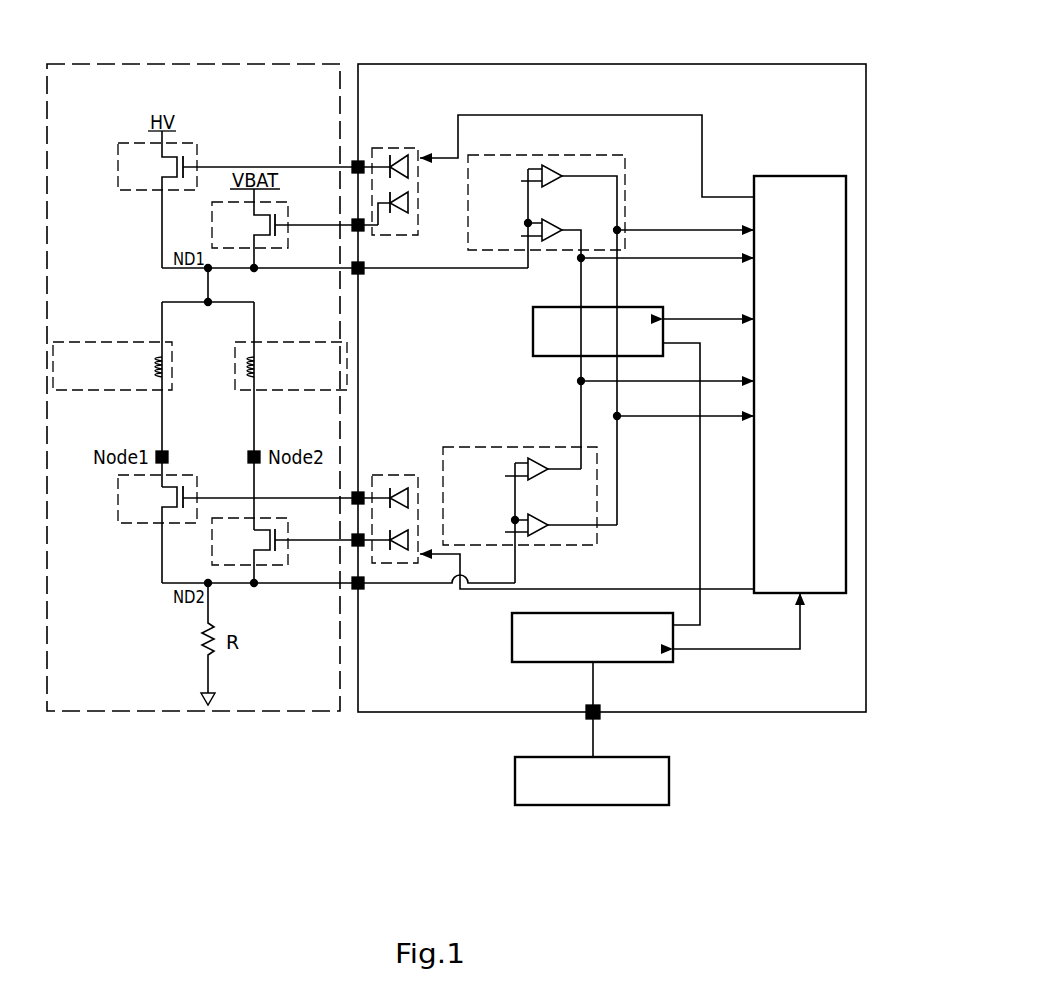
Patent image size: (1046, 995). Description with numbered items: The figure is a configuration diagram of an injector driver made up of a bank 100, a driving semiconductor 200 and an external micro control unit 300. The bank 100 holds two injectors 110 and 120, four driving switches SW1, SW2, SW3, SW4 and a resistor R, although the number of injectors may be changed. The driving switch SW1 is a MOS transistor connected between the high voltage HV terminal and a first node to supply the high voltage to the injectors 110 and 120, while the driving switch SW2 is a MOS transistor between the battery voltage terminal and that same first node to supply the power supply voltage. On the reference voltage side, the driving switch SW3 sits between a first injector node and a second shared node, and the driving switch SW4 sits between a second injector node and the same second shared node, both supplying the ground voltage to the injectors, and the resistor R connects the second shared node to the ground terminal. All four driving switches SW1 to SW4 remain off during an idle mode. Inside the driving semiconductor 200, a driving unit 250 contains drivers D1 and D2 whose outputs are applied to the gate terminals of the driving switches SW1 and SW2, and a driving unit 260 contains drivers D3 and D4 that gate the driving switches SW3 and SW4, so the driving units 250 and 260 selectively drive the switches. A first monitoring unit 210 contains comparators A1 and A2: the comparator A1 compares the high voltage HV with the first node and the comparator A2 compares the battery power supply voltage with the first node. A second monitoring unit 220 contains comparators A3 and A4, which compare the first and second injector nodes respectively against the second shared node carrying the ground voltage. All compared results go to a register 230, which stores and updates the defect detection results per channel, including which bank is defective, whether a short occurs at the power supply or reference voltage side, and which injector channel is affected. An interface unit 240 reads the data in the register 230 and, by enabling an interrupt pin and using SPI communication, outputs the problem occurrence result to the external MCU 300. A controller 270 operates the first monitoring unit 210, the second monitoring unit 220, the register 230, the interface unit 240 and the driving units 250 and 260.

The bank 100 is at (321, 62).
The driving semiconductor 200 is at (845, 62).
The injector 110 is at (97, 341).
The injector 120 is at (305, 341).
The first monitoring unit 210 is at (575, 325).
The second monitoring unit 220 is at (548, 501).
The register 230 is at (533, 331).
The interface unit 240 is at (512, 635).
The driving unit 250 is at (406, 183).
The driving unit 260 is at (406, 519).
The controller 270 is at (799, 175).
The micro control unit (MCU) 300 is at (515, 780).
The driving switch SW1 is at (118, 182).
The driving switch SW2 is at (212, 233).
The driving switch SW3 is at (118, 513).
The driving switch SW4 is at (212, 552).
The driver D1 is at (398, 148).
The driver D2 is at (403, 215).
The driver D3 is at (398, 476).
The driver D4 is at (400, 554).
The comparator A1 is at (550, 165).
The comparator A2 is at (549, 243).
The comparator A3 is at (540, 458).
The comparator A4 is at (536, 537).